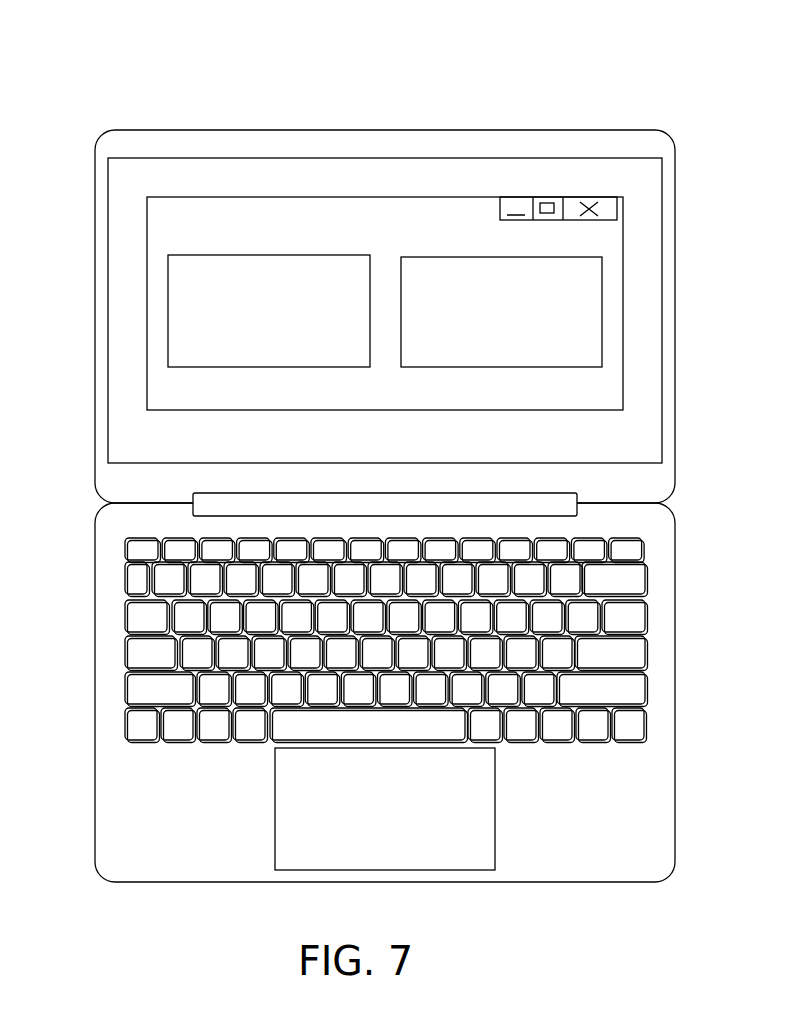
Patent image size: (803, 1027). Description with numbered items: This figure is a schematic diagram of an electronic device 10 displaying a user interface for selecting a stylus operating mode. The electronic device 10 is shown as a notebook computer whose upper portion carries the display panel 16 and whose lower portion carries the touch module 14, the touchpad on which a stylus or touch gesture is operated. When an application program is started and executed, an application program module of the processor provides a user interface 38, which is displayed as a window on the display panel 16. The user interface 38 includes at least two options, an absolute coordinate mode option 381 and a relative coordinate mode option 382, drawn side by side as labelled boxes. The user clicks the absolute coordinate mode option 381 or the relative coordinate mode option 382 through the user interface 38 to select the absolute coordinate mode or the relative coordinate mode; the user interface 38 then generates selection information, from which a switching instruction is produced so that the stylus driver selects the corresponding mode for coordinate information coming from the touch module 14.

The electronic device 10 is at (63, 118).
The touch module 14 is at (462, 855).
The display panel 16 is at (108, 353).
The user interface 38 is at (147, 233).
The absolute coordinate mode option 381 is at (168, 300).
The relative coordinate mode option 382 is at (602, 300).